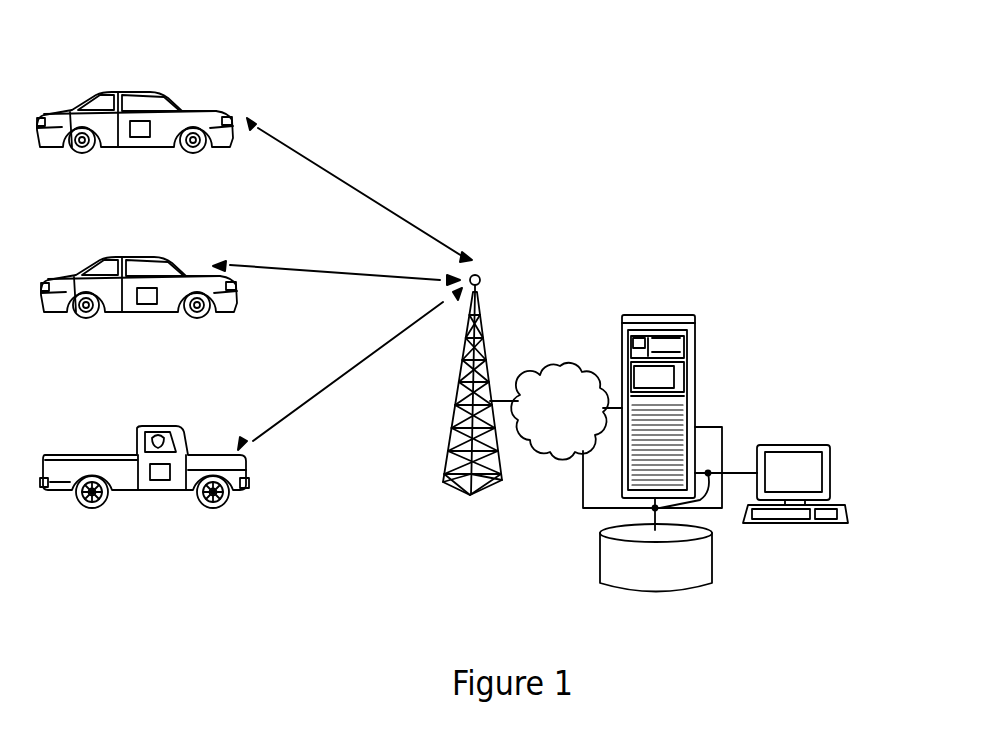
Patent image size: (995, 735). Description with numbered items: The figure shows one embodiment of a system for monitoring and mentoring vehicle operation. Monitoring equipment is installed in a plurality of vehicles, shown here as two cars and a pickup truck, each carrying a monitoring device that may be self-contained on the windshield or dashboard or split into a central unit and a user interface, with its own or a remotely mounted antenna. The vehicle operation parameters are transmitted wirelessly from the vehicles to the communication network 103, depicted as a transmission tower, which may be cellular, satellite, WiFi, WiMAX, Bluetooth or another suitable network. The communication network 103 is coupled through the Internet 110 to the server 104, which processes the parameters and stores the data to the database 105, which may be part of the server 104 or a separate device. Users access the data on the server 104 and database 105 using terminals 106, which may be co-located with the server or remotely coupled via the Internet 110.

The communication network 103 is at (460, 383).
The server 104 is at (652, 313).
The database 105 is at (667, 596).
The terminal 106 is at (833, 477).
The Internet 110 is at (550, 457).